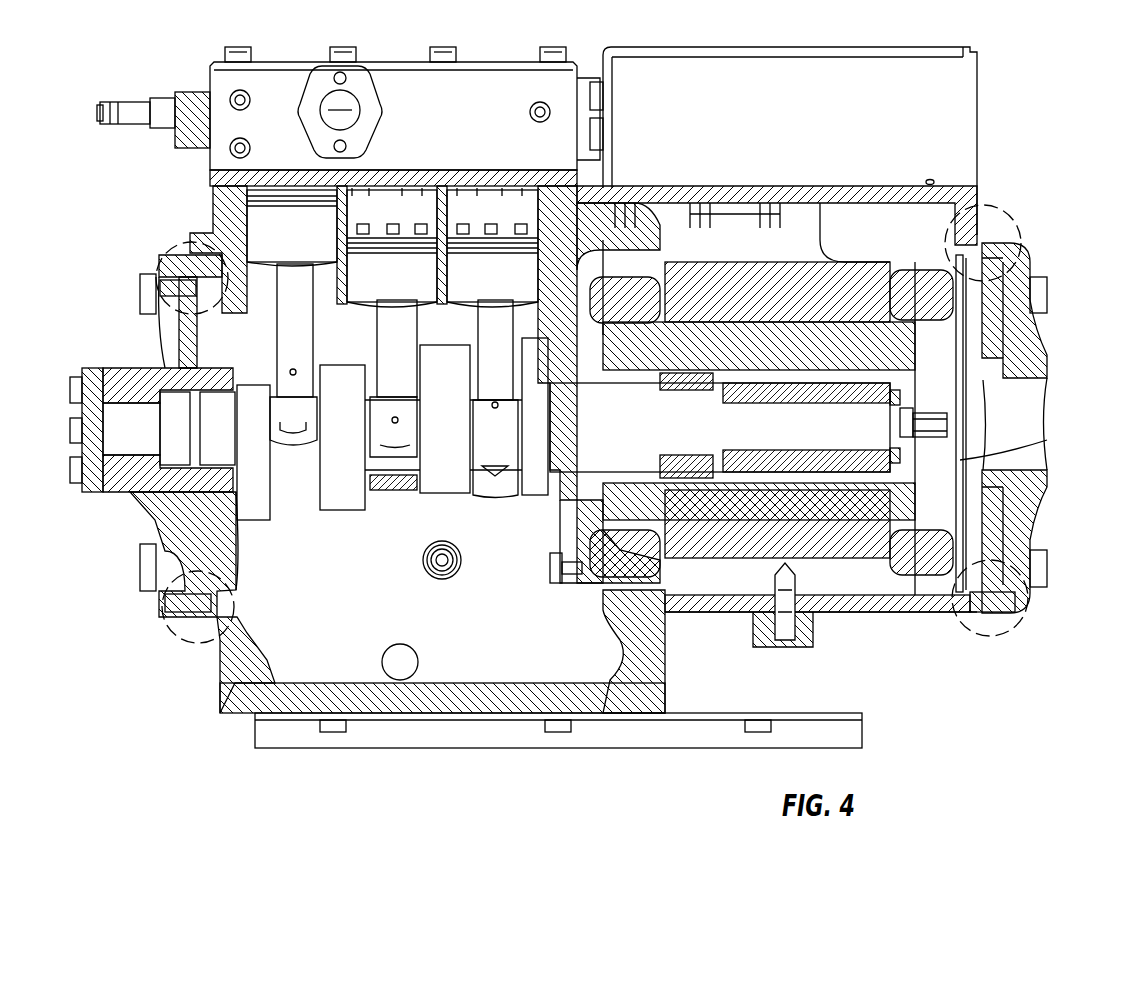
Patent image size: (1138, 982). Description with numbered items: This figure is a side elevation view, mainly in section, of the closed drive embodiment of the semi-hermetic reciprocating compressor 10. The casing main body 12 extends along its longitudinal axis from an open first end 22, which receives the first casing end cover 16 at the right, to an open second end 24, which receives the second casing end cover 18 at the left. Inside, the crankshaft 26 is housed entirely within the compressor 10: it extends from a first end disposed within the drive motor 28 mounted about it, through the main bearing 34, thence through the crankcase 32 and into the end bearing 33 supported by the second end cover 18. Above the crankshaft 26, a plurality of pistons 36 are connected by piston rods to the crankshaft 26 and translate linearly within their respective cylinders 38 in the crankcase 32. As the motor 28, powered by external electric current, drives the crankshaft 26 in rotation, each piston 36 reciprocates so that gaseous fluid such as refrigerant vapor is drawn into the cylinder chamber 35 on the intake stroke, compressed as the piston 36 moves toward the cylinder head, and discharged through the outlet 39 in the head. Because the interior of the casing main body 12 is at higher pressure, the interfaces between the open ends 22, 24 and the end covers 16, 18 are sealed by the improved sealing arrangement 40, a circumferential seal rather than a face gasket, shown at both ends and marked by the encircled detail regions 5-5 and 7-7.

The semi-hermetic reciprocating compressor 10 is at (990, 98).
The casing main body 12 is at (983, 193).
The first casing end cover 16 is at (1003, 545).
The second casing end cover 18 is at (150, 500).
The open first end 22 is at (1000, 470).
The open second end 24 is at (247, 633).
The crankshaft 26 is at (345, 512).
The drive motor 28 is at (820, 510).
The crankcase 32 is at (350, 637).
The end bearing 33 is at (172, 392).
The main bearing 34 is at (572, 503).
The cylinder chamber 35 is at (389, 215).
The piston 36 is at (250, 273).
The cylinder 38 is at (445, 213).
The outlet 39 is at (390, 128).
The sealing arrangement 40 is at (175, 600).
The section line 5-5 is at (1023, 247).
The section line 7-7 is at (197, 223).